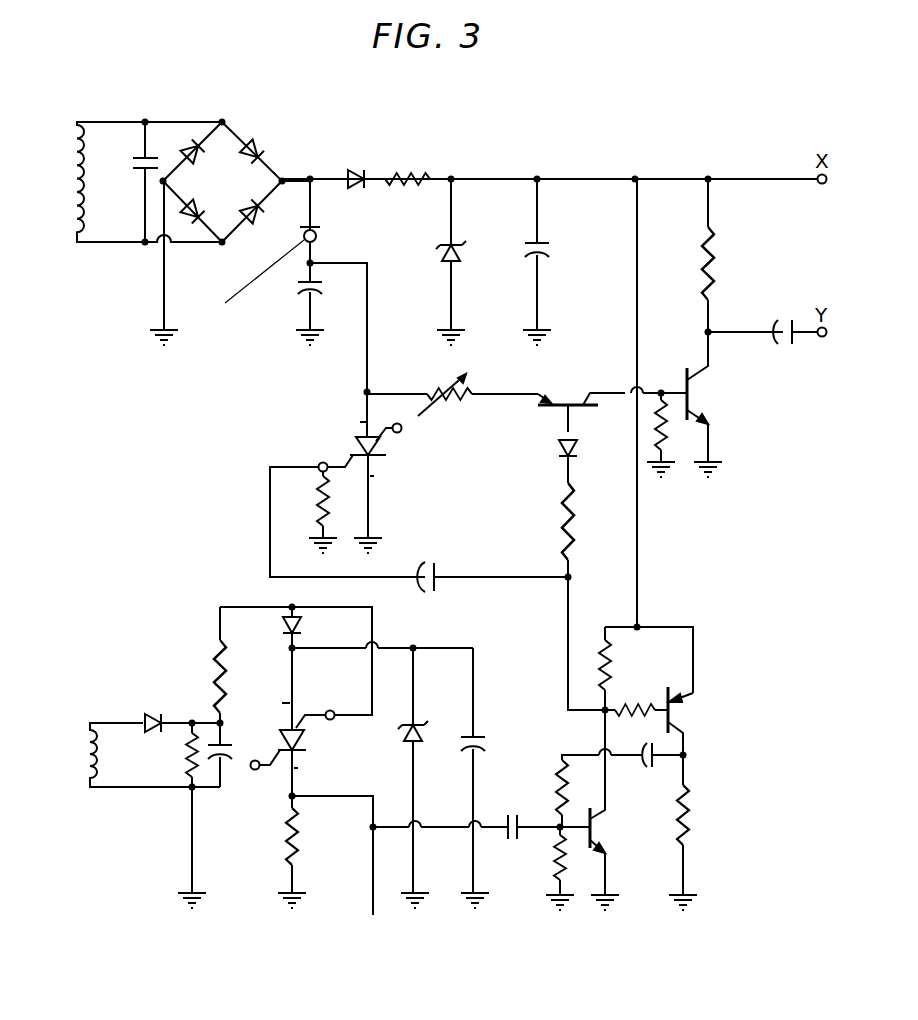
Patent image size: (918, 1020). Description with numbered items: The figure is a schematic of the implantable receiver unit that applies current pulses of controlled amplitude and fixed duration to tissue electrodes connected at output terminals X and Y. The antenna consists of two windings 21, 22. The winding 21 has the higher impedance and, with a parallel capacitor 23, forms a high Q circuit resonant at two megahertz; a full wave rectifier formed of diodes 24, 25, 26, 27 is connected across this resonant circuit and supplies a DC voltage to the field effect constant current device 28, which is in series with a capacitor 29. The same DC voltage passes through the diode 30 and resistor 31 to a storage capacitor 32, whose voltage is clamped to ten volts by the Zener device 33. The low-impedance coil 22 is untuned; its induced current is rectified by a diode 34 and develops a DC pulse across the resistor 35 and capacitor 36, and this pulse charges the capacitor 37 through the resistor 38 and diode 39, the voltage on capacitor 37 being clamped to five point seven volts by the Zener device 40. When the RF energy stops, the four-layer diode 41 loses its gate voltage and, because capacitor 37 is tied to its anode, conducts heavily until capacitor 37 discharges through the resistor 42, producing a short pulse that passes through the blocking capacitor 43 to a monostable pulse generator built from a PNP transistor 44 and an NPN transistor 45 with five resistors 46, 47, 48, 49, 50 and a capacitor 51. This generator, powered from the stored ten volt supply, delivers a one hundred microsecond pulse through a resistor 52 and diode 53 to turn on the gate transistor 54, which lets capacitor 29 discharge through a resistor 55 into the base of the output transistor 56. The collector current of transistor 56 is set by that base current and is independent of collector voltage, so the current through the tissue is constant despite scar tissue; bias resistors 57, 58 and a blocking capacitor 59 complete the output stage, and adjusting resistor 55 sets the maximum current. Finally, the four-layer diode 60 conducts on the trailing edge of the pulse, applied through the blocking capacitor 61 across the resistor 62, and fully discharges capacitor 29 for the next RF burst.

The winding 21 is at (77, 186).
The winding 22 is at (88, 768).
The capacitor 23 is at (134, 172).
The diode 24 is at (210, 197).
The diode 25 is at (188, 152).
The diode 26 is at (265, 142).
The diode 27 is at (259, 230).
The field effect constant current device 28 is at (318, 236).
The capacitor 29 is at (298, 285).
The diode 30 is at (357, 172).
The resistor 31 is at (408, 200).
The storage capacitor 32 is at (534, 242).
The Zener device 33 is at (462, 263).
The diode 34 is at (153, 713).
The resistor 35 is at (185, 770).
The capacitor 36 is at (230, 760).
The capacitor 37 is at (485, 735).
The resistor 38 is at (212, 668).
The diode 39 is at (282, 628).
The Zener device 40 is at (420, 760).
The four-layer diode 41 is at (303, 733).
The resistor 42 is at (314, 852).
The blocking capacitor 43 is at (523, 808).
The PNP transistor 44 is at (688, 712).
The NPN transistor 45 is at (600, 830).
The resistor 46 is at (560, 783).
The resistor 47 is at (554, 866).
The resistor 48 is at (646, 709).
The resistor 49 is at (629, 668).
The resistor 50 is at (690, 815).
The capacitor 51 is at (643, 770).
The resistor 52 is at (561, 517).
The diode 53 is at (560, 446).
The gate transistor 54 is at (566, 405).
The resistor 55 is at (459, 406).
The output transistor 56 is at (697, 388).
The bias resistor 57 is at (664, 438).
The bias resistor 58 is at (718, 265).
The blocking capacitor 59 is at (789, 319).
The four-layer diode 60 is at (385, 447).
The blocking capacitor 61 is at (430, 562).
The resistor 62 is at (316, 492).